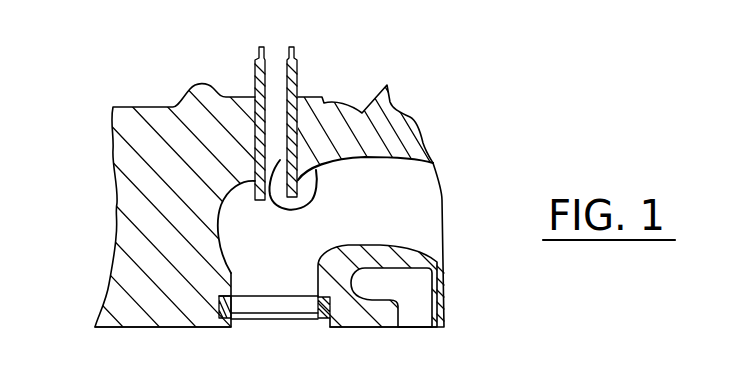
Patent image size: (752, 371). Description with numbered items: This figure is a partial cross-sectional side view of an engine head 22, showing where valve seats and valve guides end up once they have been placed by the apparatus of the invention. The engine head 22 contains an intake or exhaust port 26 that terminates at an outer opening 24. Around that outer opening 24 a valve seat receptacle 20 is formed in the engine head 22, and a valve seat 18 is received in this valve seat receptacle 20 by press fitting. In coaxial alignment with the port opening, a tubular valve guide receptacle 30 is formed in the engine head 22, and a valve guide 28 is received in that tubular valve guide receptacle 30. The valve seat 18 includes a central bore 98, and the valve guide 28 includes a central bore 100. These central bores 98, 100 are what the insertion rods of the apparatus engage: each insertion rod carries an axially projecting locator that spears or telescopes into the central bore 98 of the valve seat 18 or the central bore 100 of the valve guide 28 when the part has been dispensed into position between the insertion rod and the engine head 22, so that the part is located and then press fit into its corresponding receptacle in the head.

The valve seat 18 is at (321, 316).
The valve seat receptacle 20 is at (238, 296).
The engine head 22 is at (137, 172).
The outer opening 24 is at (221, 329).
The intake or exhaust port 26 is at (241, 268).
The valve guide 28 is at (297, 75).
The tubular valve guide receptacle 30 is at (285, 112).
The central bore 98 is at (318, 299).
The central bore 100 is at (318, 185).